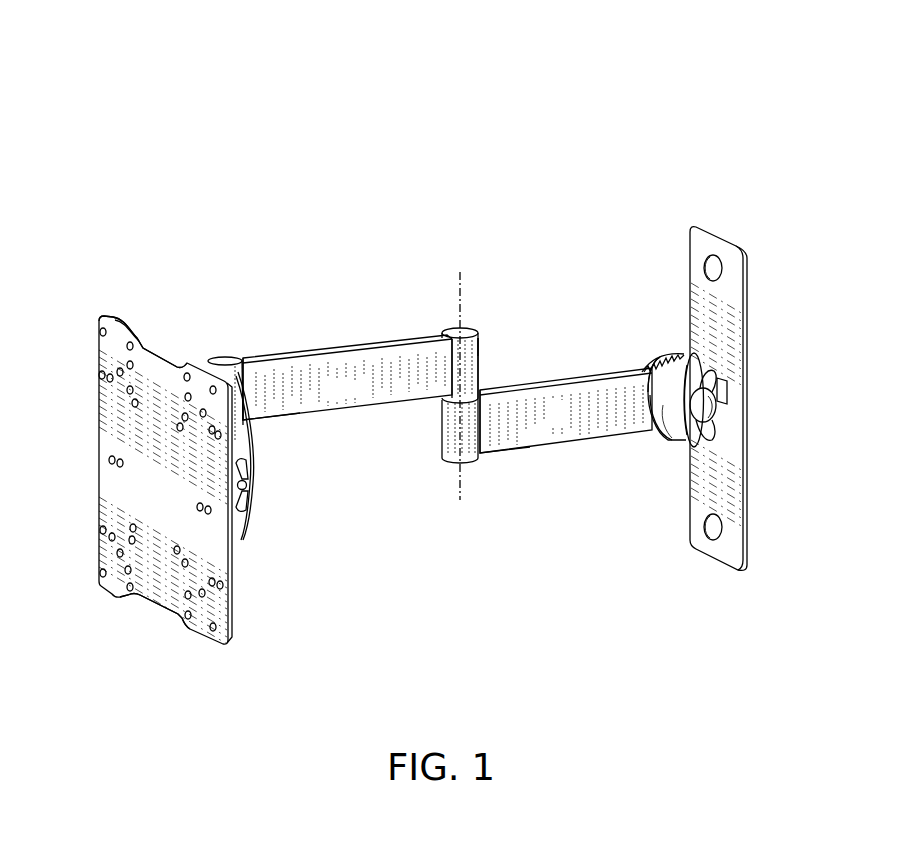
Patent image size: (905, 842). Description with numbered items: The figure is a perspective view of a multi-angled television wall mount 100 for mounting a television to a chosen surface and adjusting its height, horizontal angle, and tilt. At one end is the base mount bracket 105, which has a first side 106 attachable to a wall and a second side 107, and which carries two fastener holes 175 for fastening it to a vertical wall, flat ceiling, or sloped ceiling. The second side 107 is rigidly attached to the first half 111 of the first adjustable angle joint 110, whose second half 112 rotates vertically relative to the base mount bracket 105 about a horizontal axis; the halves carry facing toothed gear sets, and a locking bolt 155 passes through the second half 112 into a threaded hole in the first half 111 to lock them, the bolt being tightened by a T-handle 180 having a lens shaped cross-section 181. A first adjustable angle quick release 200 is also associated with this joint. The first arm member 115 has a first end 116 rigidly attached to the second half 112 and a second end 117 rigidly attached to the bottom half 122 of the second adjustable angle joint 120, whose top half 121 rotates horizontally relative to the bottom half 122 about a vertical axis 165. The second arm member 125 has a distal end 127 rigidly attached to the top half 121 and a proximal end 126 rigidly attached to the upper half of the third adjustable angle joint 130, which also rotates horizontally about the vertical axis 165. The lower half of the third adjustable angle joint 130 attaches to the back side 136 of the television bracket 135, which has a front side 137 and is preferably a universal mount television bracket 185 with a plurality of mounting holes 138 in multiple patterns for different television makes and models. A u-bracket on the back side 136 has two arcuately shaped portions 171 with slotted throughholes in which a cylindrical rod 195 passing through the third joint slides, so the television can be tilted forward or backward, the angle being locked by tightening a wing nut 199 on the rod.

The multi-angled television wall mount 100 is at (640, 51).
The base mount bracket 105 is at (698, 224).
The first side 106 is at (748, 273).
The second side 107 is at (700, 250).
The fastener holes 175 is at (712, 527).
The first adjustable angle joint 110 is at (640, 331).
The first half 111 is at (672, 353).
The second half 112 is at (665, 410).
The first end 116 is at (637, 397).
The locking bolt 155 is at (714, 407).
The T-handle 180 is at (703, 372).
The lens shaped cross-section 181 is at (704, 433).
The first adjustable angle quick release 200 is at (710, 424).
The first arm member 115 is at (580, 427).
The second end 117 is at (495, 420).
The second adjustable angle joint 120 is at (440, 315).
The top half 121 is at (480, 350).
The bottom half 122 is at (453, 433).
The distal end 127 is at (448, 382).
The vertical axis 165 is at (461, 280).
The second arm member 125 is at (360, 397).
The proximal end 126 is at (248, 390).
The third adjustable angle joint 130 is at (227, 357).
The arcuately shaped portions 171 is at (256, 436).
The cylindrical rod 195 is at (247, 481).
The wing nut 199 is at (250, 492).
The universal mount television bracket 185 is at (117, 483).
The television bracket 135 is at (109, 316).
The back side 136 is at (145, 337).
The front side 137 is at (168, 567).
The mounting holes 138 is at (98, 373).